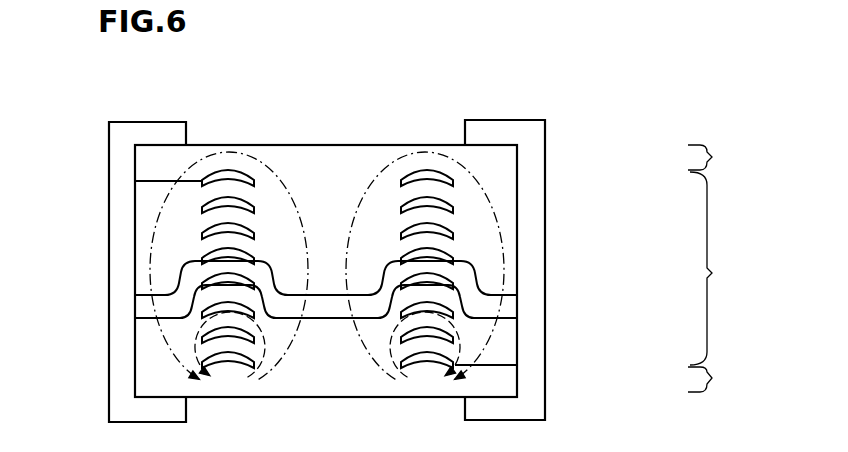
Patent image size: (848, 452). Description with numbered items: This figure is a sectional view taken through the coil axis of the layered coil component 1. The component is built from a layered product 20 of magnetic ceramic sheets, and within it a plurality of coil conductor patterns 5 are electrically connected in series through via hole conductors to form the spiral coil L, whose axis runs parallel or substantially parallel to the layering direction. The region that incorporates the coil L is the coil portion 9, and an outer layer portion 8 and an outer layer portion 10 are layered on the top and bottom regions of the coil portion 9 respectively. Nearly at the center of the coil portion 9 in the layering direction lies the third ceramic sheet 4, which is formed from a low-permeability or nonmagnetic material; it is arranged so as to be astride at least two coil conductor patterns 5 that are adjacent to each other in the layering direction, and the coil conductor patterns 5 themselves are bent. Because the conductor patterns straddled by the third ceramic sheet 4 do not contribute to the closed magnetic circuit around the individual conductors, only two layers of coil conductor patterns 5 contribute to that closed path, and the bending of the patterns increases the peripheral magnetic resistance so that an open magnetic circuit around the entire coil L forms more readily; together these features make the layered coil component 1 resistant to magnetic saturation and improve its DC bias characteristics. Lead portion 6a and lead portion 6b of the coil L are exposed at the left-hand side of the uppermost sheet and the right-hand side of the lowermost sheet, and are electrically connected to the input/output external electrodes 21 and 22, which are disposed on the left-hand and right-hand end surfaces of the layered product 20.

The layered coil component 1 is at (117, 78).
The third ceramic sheet 4 is at (328, 308).
The coil conductor pattern 5 is at (200, 228).
The lead portion 6a is at (135, 181).
The lead portion 6b is at (512, 362).
The outer layer portion 8 is at (709, 155).
The coil portion 9 is at (710, 268).
The outer layer portion 10 is at (716, 380).
The layered product 20 is at (360, 265).
The input/output external electrode 21 is at (131, 134).
The input/output external electrode 22 is at (532, 137).
The coil L is at (393, 231).